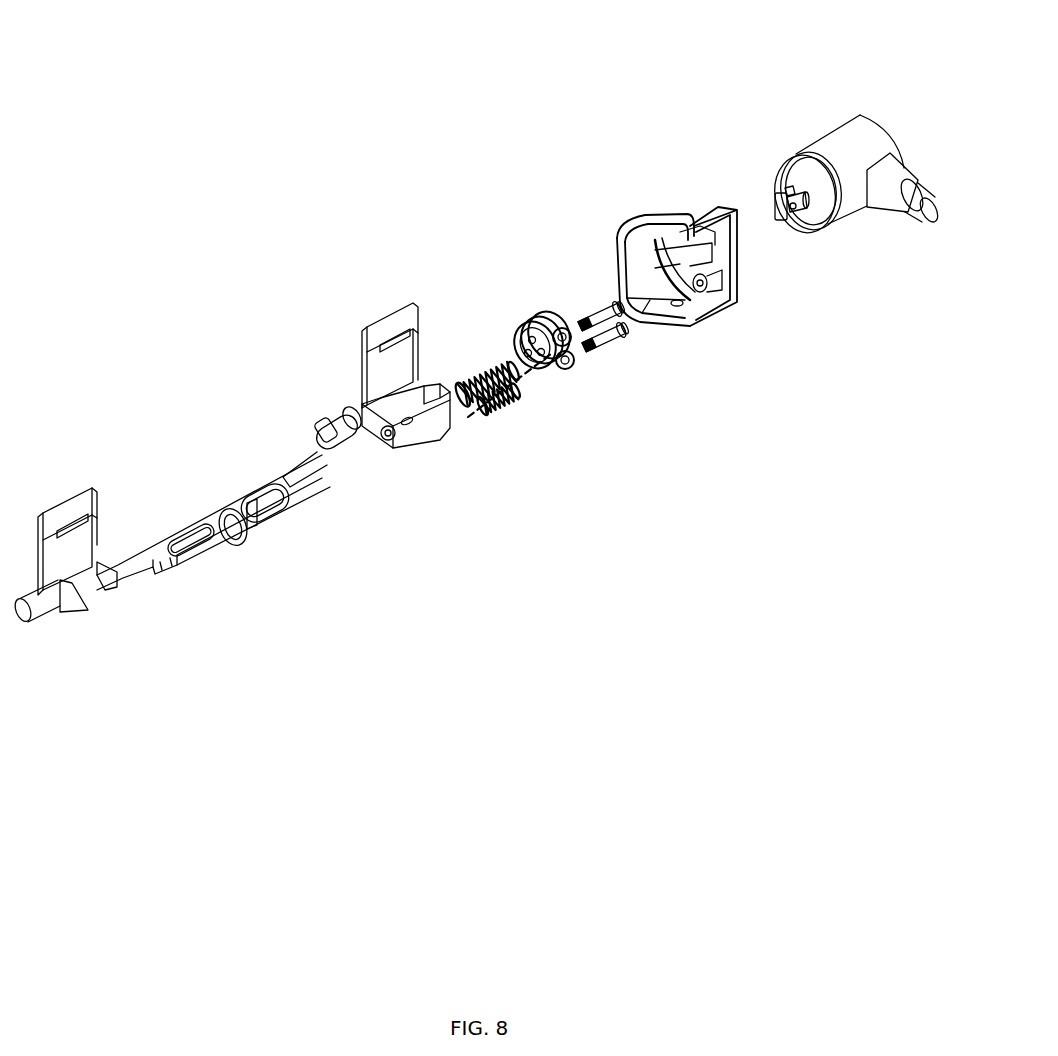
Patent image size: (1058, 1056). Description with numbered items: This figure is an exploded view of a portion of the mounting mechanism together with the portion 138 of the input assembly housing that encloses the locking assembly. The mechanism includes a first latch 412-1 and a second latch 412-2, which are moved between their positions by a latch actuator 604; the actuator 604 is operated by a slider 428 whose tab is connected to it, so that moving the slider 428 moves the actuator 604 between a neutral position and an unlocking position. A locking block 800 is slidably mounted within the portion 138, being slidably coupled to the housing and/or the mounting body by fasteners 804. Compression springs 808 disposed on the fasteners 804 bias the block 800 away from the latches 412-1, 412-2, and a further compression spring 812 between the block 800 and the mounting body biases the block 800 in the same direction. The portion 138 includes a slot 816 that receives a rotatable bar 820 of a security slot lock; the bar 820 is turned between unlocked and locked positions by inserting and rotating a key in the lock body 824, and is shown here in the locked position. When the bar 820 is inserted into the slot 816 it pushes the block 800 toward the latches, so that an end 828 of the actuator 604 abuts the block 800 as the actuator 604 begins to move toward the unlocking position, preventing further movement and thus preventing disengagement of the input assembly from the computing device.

The portion of a housing 138 is at (663, 212).
The first latch 412-1 is at (75, 486).
The second latch 412-2 is at (373, 310).
The slider 428 is at (267, 517).
The latch actuator 604 is at (278, 464).
The locking block 800 is at (547, 322).
The fasteners 804 is at (612, 328).
The compression springs 808 is at (481, 385).
The compression spring 812 is at (517, 365).
The slot 816 is at (693, 268).
The rotatable bar 820 is at (777, 190).
The lock body 824 is at (844, 122).
The end of the actuator 828 is at (437, 392).